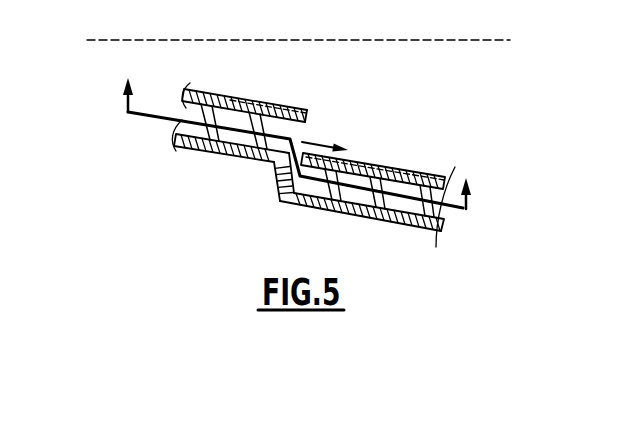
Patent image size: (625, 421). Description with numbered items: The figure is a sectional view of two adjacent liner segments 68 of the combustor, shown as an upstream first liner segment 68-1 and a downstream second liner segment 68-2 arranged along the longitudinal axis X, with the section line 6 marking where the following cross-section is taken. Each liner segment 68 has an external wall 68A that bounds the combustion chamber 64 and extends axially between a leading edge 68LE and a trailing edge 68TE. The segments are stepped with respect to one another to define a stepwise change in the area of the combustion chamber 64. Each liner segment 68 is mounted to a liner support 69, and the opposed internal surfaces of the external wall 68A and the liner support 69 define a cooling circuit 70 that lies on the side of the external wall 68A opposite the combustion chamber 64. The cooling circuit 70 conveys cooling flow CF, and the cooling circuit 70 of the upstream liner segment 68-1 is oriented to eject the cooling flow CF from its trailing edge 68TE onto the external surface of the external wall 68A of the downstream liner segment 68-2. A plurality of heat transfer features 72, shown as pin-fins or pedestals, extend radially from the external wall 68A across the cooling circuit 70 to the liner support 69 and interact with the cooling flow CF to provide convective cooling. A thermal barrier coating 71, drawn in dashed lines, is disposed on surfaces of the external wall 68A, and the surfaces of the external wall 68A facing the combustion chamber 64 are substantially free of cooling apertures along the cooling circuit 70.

The combustion chamber 64 is at (391, 105).
The liner segment 68 is at (300, 132).
The first liner segment 68-1 is at (200, 90).
The second liner segment 68-2 is at (405, 168).
The external wall 68A is at (213, 104).
The trailing edge 68TE is at (308, 117).
The leading edge 68LE is at (275, 172).
The liner support 69 is at (187, 148).
The cooling circuit 70 is at (178, 134).
The thermal barrier coating 71 is at (277, 101).
The heat transfer features 72 is at (226, 142).
The section line 6- 6 is at (293, 160).
The longitudinal axis X is at (483, 40).
The cooling flow CF is at (318, 142).